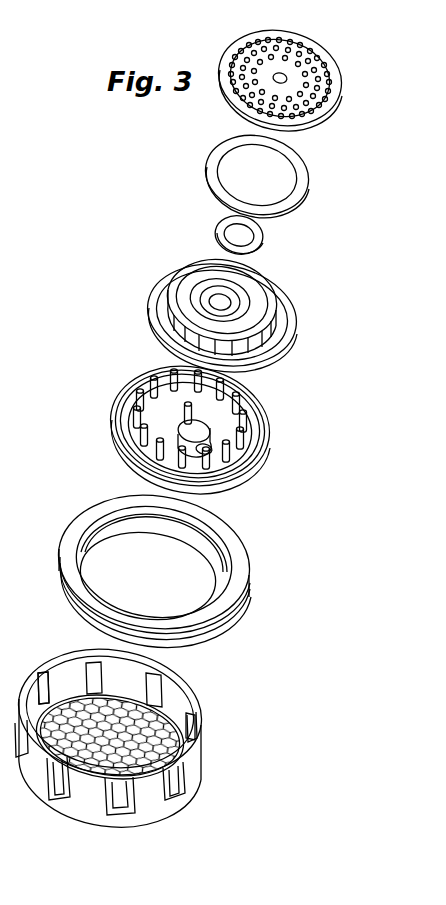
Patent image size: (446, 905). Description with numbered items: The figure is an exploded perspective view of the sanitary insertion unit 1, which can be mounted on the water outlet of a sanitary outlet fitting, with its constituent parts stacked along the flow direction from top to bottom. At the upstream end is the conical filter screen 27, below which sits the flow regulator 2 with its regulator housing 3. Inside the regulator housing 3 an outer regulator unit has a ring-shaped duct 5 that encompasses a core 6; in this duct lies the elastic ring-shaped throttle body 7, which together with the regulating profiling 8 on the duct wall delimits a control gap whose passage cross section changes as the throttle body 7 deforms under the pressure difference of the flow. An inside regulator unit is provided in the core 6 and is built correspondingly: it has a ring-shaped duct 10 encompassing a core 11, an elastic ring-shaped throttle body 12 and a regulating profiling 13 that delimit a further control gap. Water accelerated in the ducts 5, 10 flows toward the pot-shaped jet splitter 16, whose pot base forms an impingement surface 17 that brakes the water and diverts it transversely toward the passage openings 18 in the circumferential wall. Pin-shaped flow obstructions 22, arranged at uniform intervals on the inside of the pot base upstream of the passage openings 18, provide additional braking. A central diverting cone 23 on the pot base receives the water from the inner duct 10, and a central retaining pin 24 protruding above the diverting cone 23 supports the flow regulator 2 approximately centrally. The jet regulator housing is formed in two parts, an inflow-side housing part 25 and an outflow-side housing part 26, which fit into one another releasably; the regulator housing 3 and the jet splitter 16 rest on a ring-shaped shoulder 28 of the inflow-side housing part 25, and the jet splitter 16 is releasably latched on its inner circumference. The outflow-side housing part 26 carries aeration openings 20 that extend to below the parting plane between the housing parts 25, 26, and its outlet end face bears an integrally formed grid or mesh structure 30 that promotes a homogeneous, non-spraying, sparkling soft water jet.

The sanitary insertion unit 1 is at (363, 372).
The flow regulator 2 is at (298, 290).
The regulator housing 3 is at (158, 298).
The ring-shaped duct 5 is at (205, 279).
The core 6 is at (190, 300).
The throttle body 7 is at (308, 178).
The regulating profiling 8 is at (185, 282).
The ring-shaped duct 10 is at (230, 290).
The core 11 is at (220, 310).
The throttle body 12 is at (245, 220).
The regulating profiling 13 is at (246, 312).
The pot-shaped jet splitter 16 is at (270, 423).
The impingement surface 17 is at (215, 449).
The passage openings 18 is at (185, 413).
The aeration openings 20 is at (65, 678).
The flow obstructions 22 is at (150, 448).
The central diverting cone 23 is at (197, 453).
The central retaining pin 24 is at (223, 410).
The inflow-side housing part 25 is at (237, 595).
The outflow-side housing part 26 is at (157, 804).
The filter screen 27 is at (330, 100).
The ring-shaped shoulder 28 is at (228, 556).
The grid or mesh structure 30 is at (145, 735).